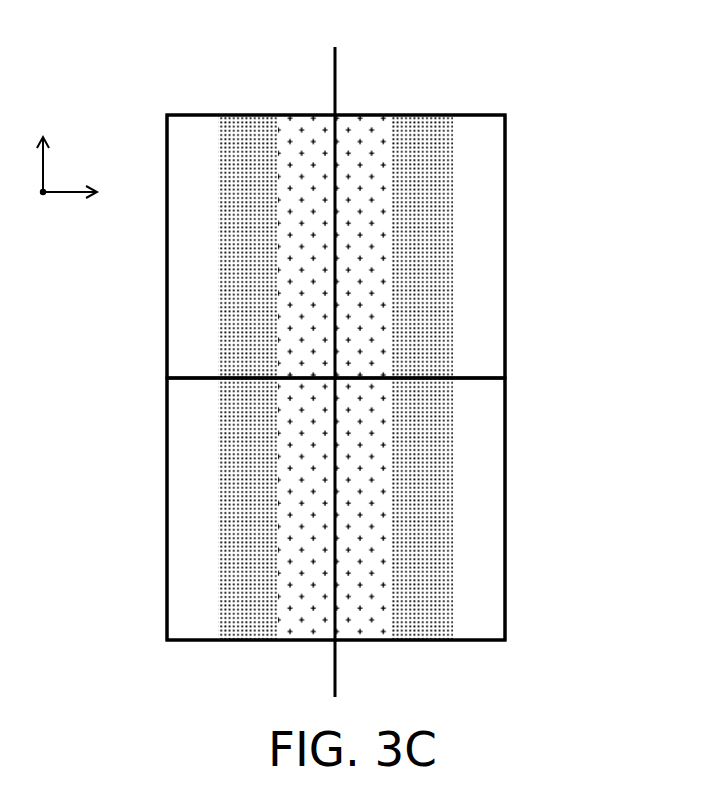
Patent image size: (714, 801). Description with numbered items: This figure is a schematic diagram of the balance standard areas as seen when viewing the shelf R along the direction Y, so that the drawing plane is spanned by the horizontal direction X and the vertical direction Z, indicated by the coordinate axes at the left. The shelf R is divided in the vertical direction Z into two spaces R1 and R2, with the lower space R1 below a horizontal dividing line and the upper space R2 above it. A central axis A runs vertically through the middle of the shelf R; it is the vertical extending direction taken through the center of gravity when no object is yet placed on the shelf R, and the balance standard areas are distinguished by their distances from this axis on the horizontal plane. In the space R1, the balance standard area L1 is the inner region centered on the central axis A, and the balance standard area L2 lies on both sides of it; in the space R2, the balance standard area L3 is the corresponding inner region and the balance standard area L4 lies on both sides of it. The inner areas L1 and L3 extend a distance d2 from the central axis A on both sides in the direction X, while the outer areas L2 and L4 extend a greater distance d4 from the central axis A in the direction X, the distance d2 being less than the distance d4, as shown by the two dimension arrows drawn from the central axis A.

The central axis A is at (334, 353).
The shelf R is at (525, 102).
The space R1 is at (377, 509).
The space R2 is at (382, 246).
The balance standard area L1 is at (335, 509).
The balance standard area L2 is at (335, 509).
The balance standard area L3 is at (335, 246).
The balance standard area L4 is at (335, 246).
The distance d2 is at (323, 363).
The distance d4 is at (441, 363).
The direction X is at (80, 192).
The direction Y is at (41, 213).
The direction Z is at (43, 144).